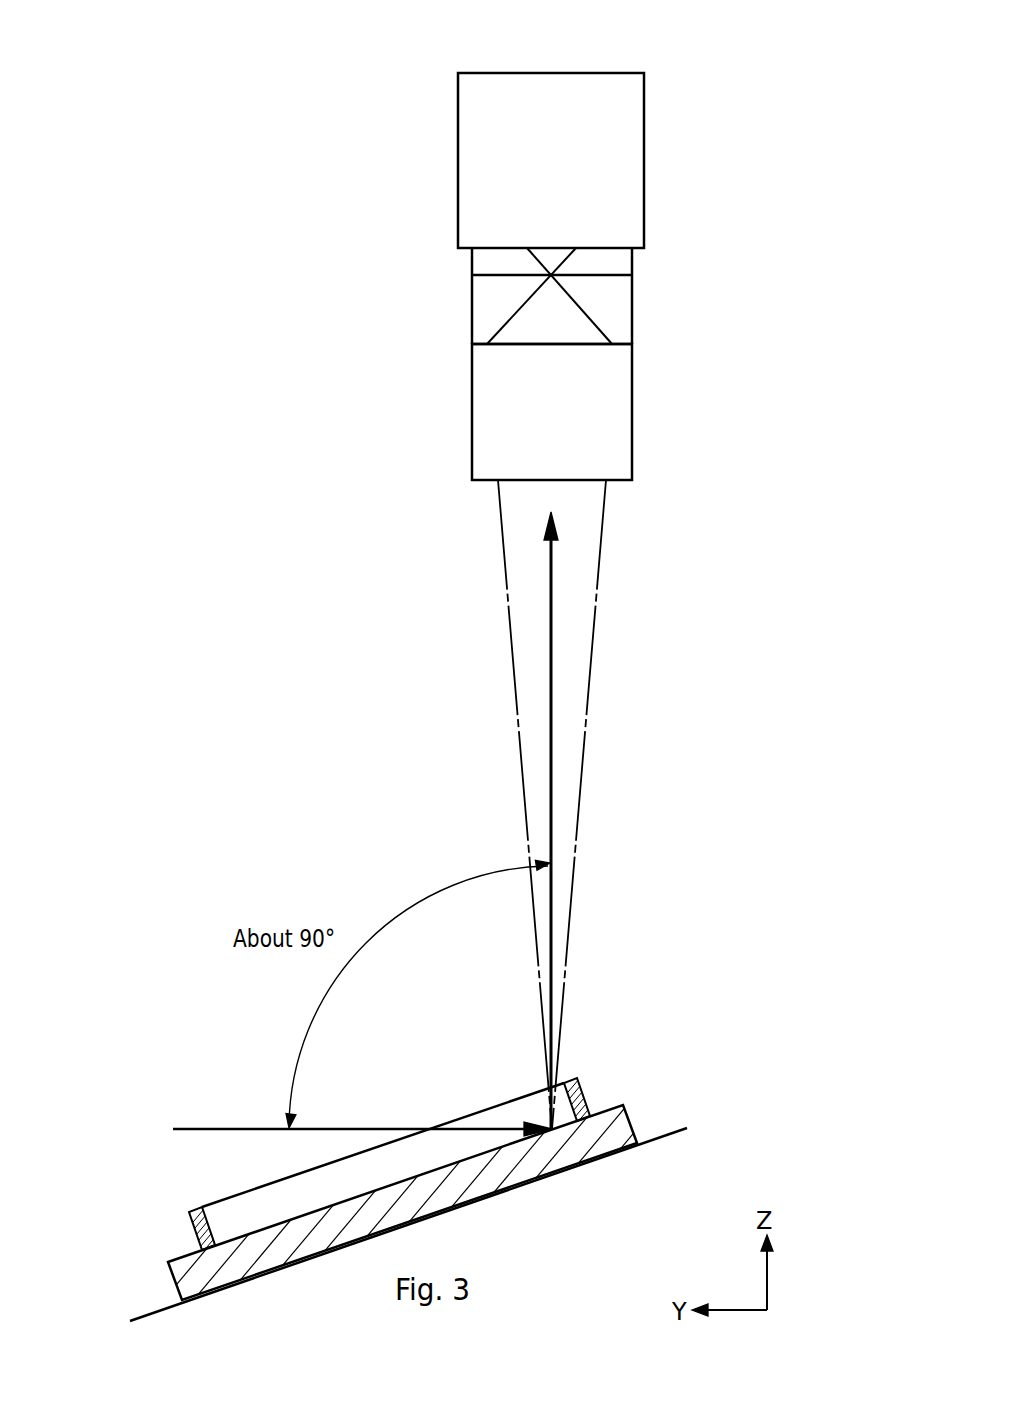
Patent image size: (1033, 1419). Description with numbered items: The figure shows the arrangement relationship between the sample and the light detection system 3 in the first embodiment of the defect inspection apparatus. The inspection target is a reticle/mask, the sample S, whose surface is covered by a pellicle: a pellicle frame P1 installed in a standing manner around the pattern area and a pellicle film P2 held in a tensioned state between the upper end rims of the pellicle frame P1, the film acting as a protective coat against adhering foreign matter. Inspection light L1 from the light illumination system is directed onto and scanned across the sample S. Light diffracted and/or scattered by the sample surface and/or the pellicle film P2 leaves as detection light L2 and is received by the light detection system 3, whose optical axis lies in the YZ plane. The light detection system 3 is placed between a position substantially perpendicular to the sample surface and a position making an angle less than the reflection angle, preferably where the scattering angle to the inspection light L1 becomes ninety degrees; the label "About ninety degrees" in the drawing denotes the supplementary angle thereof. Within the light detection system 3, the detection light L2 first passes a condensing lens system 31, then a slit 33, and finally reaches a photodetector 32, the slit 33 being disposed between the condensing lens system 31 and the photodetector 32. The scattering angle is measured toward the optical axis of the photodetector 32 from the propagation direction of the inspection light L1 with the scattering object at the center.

The light detection system 3 is at (338, 78).
The photodetector 32 is at (428, 205).
The slit 33 is at (532, 285).
The condensing lens system 31 is at (457, 400).
The detection light L2 is at (612, 597).
The inspection light L1 is at (238, 1128).
The sample S is at (622, 1105).
The pellicle frame P1 is at (192, 1210).
The pellicle film P2 is at (243, 1192).